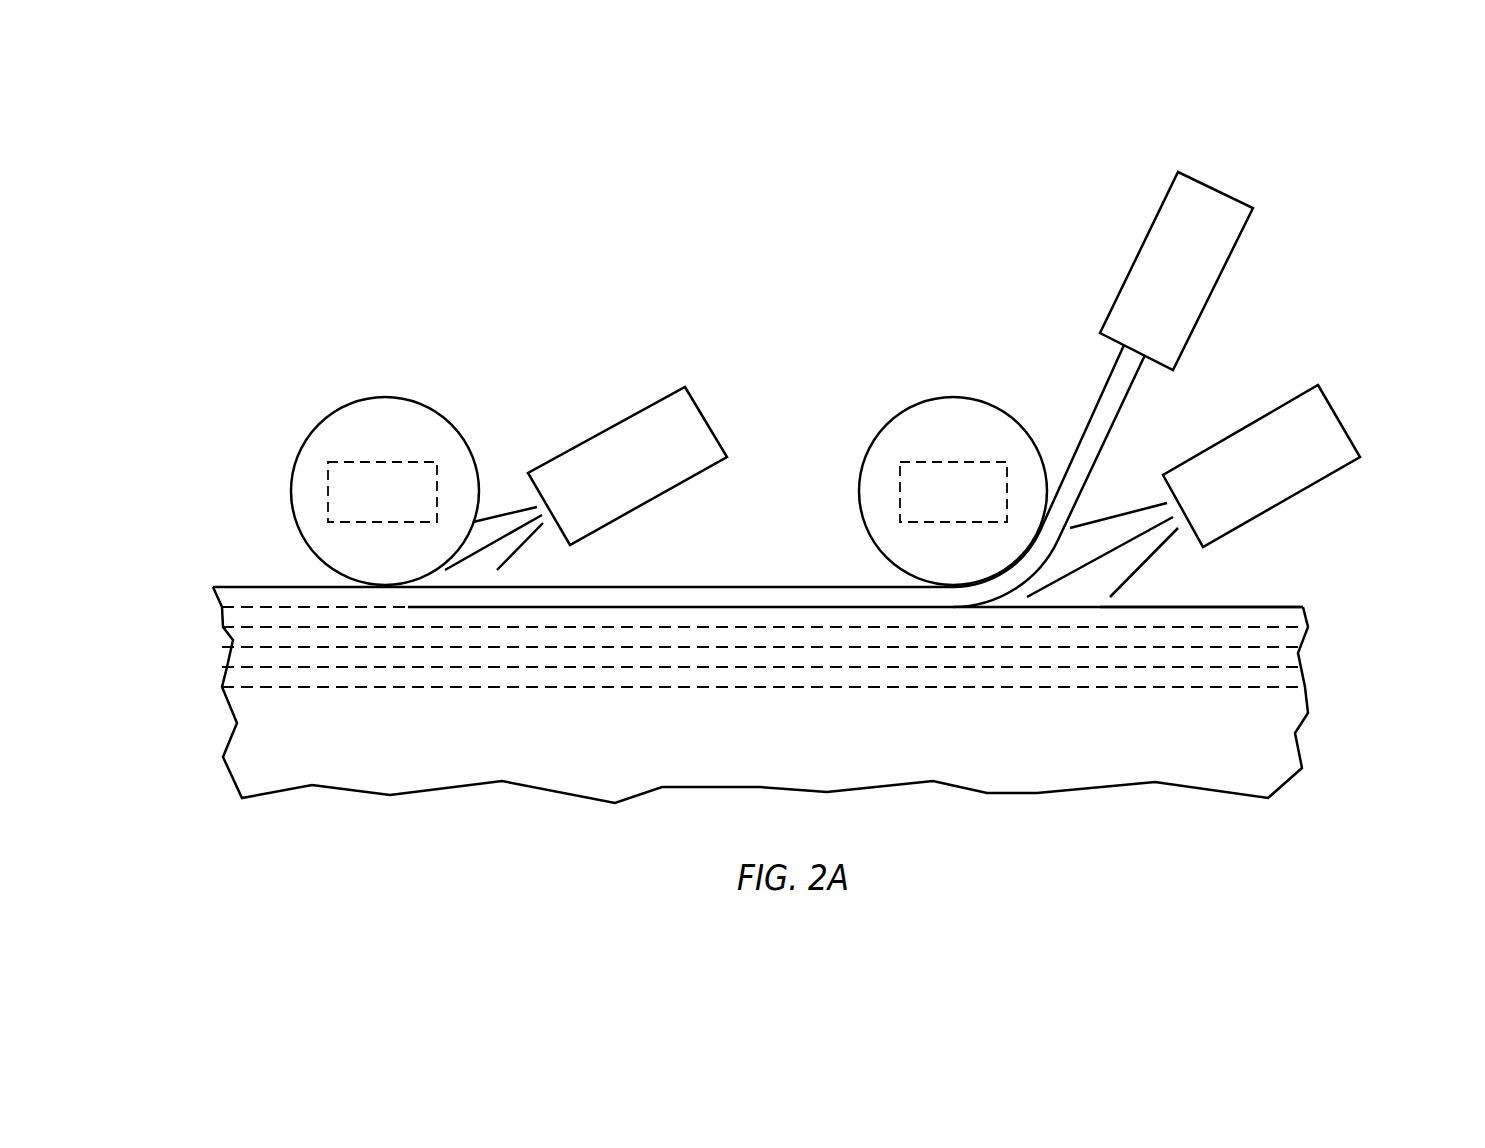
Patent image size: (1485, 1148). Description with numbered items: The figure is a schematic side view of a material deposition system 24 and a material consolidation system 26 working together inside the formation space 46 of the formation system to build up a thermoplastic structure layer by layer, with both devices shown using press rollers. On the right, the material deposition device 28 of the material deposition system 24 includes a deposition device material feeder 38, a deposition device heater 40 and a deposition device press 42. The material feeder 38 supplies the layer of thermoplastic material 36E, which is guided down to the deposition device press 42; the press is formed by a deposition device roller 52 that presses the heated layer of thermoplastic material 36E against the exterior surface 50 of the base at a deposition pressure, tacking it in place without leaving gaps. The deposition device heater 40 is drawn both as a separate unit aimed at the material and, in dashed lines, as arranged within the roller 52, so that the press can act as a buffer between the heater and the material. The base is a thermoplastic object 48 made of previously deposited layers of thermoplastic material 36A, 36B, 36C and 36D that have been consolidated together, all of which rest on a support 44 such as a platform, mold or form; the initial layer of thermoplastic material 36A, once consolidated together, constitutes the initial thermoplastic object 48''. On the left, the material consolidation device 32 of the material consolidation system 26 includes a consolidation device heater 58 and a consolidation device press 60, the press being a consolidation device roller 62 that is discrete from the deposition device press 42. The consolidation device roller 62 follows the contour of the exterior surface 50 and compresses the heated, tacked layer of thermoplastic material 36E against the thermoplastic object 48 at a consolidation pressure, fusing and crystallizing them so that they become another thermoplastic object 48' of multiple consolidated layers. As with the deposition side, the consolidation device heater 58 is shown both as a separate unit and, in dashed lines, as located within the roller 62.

The material deposition system 24 is at (1105, 360).
The material deposition device 28 is at (1105, 360).
The material consolidation system 26 is at (479, 391).
The material consolidation device 32 is at (479, 391).
The layer of thermoplastic material 36A is at (1296, 680).
The layer of thermoplastic material 36B is at (1296, 655).
The layer of thermoplastic material 36C is at (1296, 637).
The layer of thermoplastic material 36D is at (1296, 617).
The layer of thermoplastic material 36E is at (223, 593).
The deposition device material feeder 38 is at (1230, 278).
The deposition device heater 40 is at (1340, 403).
The deposition device press 42 is at (953, 449).
The support 44 is at (1290, 750).
The formation space 46 is at (802, 218).
The thermoplastic object 48 is at (1447, 646).
The thermoplastic object 48' is at (123, 637).
The initial thermoplastic object 48'' is at (201, 699).
The exterior surface 50 is at (1268, 607).
The deposition device roller 52 is at (993, 407).
The consolidation device heater 58 is at (680, 378).
The consolidation device press 60 is at (402, 452).
The consolidation device roller 62 is at (457, 430).